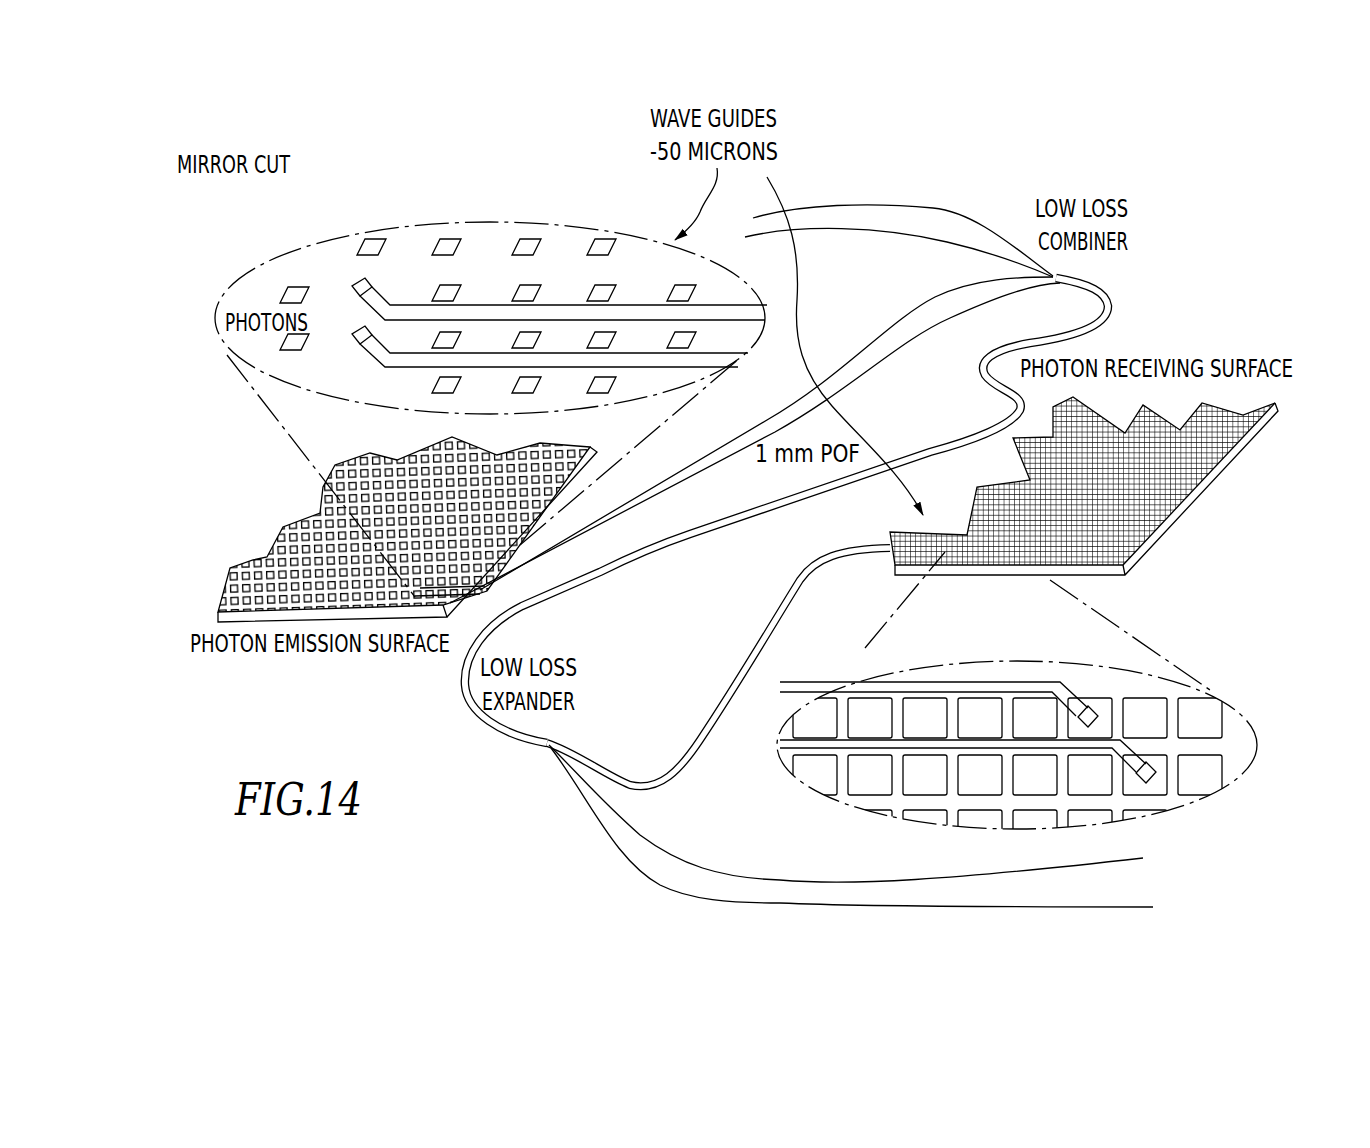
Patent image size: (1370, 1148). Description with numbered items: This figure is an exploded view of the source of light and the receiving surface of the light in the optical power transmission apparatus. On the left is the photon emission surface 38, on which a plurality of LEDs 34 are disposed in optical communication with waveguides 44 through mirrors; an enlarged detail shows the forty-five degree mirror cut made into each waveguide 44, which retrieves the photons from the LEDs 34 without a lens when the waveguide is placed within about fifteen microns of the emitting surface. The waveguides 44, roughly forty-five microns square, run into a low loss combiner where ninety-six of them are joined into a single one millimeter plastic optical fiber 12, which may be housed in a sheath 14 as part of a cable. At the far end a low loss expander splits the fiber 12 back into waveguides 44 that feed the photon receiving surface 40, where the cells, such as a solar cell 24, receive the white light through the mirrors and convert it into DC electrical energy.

The plastic optical fiber 12 is at (898, 204).
The sheath 14 is at (717, 533).
The solar cell 24 is at (889, 689).
The LEDs 34 is at (268, 350).
The photon emission surface 38 is at (232, 567).
The photon receiving surface 40 is at (1195, 495).
The waveguides 44 is at (272, 278).